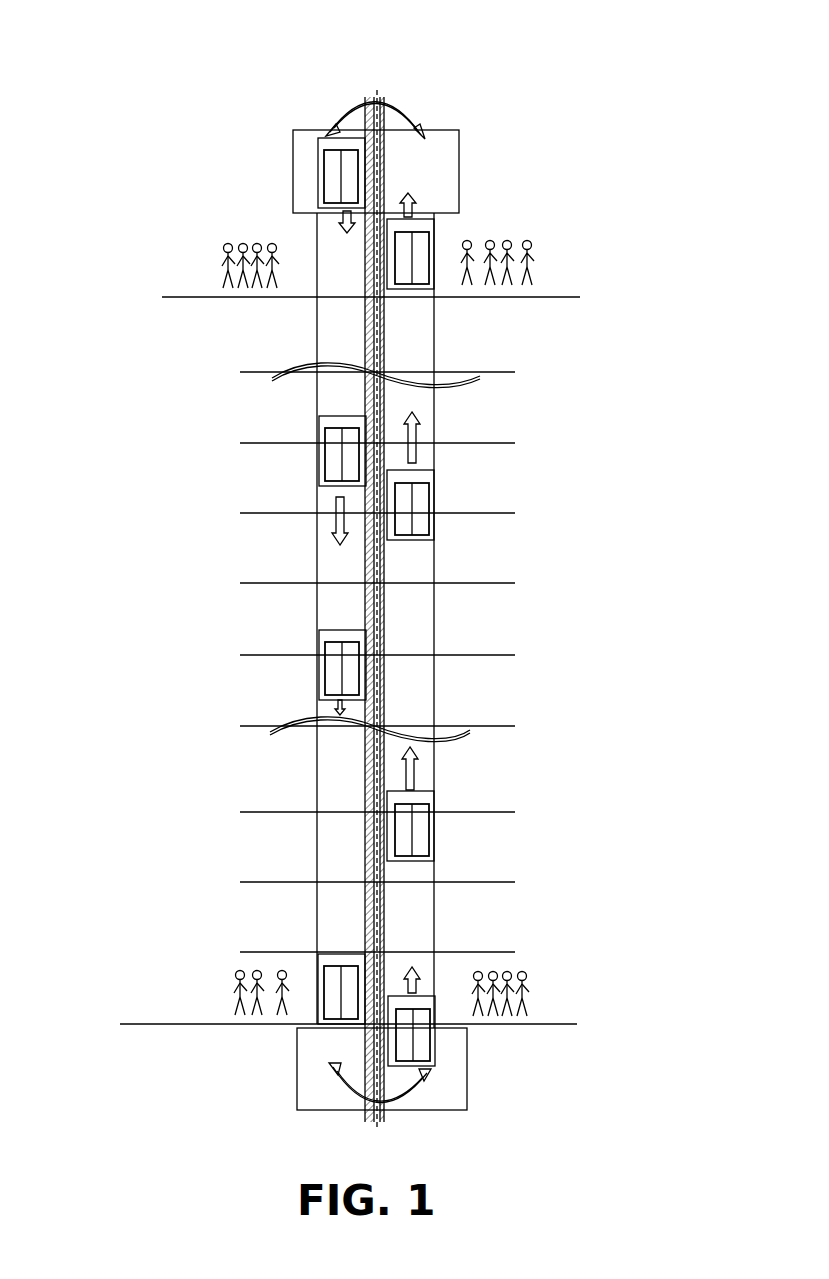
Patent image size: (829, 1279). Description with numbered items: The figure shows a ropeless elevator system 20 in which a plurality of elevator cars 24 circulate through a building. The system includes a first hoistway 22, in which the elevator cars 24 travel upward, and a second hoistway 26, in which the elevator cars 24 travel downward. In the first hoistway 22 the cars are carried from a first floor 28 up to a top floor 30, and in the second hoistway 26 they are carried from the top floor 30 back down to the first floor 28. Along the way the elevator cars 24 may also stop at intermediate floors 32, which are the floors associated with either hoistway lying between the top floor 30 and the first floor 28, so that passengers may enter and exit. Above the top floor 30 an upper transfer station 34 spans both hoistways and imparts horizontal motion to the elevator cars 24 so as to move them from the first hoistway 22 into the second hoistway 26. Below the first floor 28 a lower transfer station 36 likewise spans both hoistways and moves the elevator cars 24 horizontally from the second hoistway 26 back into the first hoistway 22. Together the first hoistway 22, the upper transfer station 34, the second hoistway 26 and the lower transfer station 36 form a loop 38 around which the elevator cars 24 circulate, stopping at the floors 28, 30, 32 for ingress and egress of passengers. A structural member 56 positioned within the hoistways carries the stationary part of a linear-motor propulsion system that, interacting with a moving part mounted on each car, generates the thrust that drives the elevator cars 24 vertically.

The ropeless elevator system 20 is at (176, 82).
The first hoistway 22 is at (408, 918).
The elevator car 24 is at (347, 452).
The second hoistway 26 is at (340, 868).
The first floor 28 is at (220, 1003).
The top floor 30 is at (210, 280).
The intermediate floor 32 is at (255, 433).
The upper transfer station 34 is at (415, 166).
The lower transfer station 36 is at (450, 1085).
The loop 38 is at (385, 100).
The structural member 56 is at (385, 605).